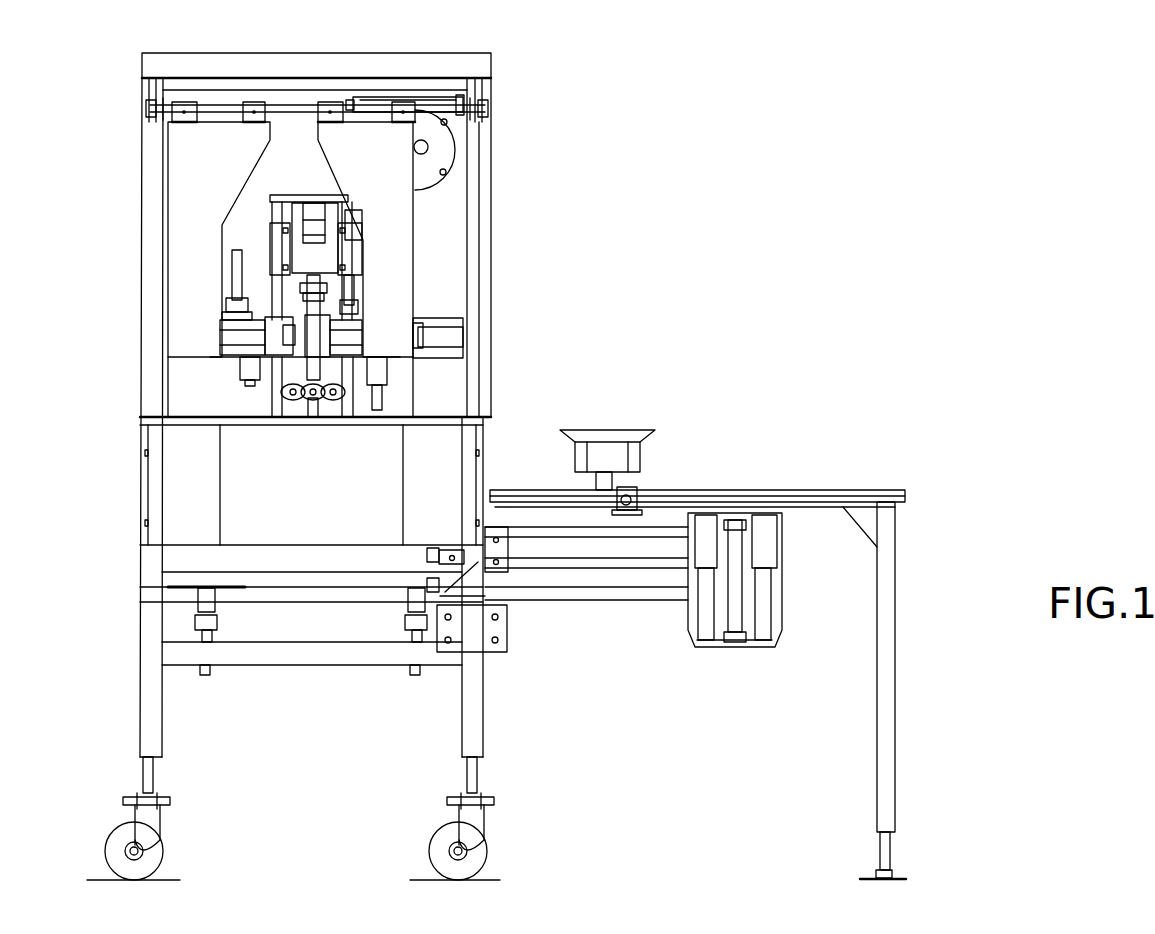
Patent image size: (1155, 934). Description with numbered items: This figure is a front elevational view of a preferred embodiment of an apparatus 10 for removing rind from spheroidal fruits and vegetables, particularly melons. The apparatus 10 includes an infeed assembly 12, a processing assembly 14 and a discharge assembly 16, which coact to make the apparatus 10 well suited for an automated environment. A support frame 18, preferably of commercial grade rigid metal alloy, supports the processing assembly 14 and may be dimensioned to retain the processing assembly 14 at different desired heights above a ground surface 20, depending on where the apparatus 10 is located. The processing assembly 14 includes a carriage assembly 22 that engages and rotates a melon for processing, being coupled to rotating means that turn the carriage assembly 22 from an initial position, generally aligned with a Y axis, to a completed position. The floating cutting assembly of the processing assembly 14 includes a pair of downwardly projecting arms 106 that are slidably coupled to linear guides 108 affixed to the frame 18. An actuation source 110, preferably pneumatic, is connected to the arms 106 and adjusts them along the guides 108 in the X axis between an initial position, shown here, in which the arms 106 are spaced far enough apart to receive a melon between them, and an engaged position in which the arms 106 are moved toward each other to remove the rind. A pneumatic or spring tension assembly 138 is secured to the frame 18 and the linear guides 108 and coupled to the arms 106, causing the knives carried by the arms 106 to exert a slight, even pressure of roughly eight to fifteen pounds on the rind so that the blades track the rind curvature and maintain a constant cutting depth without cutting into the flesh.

The processing apparatus 10 is at (464, 532).
The infeed assembly 12 is at (311, 485).
The processing assembly 14 is at (356, 405).
The discharge assembly 16 is at (695, 604).
The support frame 18 is at (523, 269).
The ground surface 20 is at (299, 818).
The carriage assembly 22 is at (336, 214).
The downwardly projecting arms 106 is at (300, 269).
The linear guides 108 is at (434, 100).
The actuation source 110 is at (377, 92).
The spring tension assembly 138 is at (293, 66).